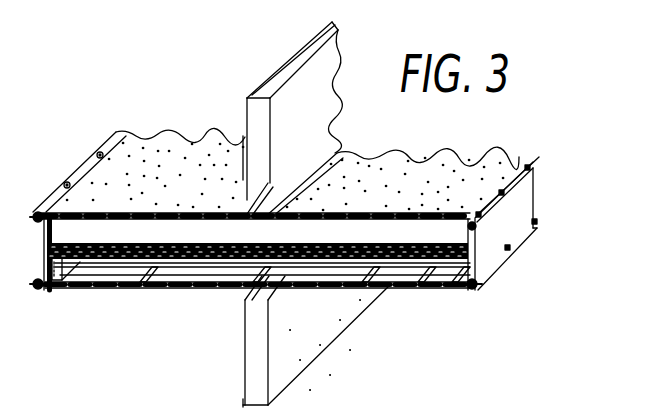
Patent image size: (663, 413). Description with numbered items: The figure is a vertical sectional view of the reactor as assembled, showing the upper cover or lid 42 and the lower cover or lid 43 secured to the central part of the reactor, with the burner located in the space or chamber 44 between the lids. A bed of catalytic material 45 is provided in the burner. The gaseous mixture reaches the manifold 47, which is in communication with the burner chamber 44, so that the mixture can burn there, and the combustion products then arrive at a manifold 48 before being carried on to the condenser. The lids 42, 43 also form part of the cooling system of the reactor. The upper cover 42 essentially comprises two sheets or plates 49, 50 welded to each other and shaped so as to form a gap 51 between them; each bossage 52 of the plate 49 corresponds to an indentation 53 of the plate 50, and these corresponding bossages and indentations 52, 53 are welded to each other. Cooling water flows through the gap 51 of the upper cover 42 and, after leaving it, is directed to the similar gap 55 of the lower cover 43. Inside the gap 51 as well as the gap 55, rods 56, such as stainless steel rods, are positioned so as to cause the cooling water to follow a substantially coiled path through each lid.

The upper cover 42 is at (270, 62).
The lower cover 43 is at (174, 295).
The burner chamber 44 is at (181, 237).
The bed of catalytic material 45 is at (302, 247).
The manifold 47 is at (257, 138).
The manifold 48 is at (250, 362).
The sheet or plate 49 is at (57, 237).
The sheet or plate 50 is at (38, 237).
The gap 51 is at (146, 235).
The bossage 52 is at (537, 184).
The indentation 53 is at (418, 232).
The gap 55 is at (133, 286).
The rods 56 is at (130, 133).